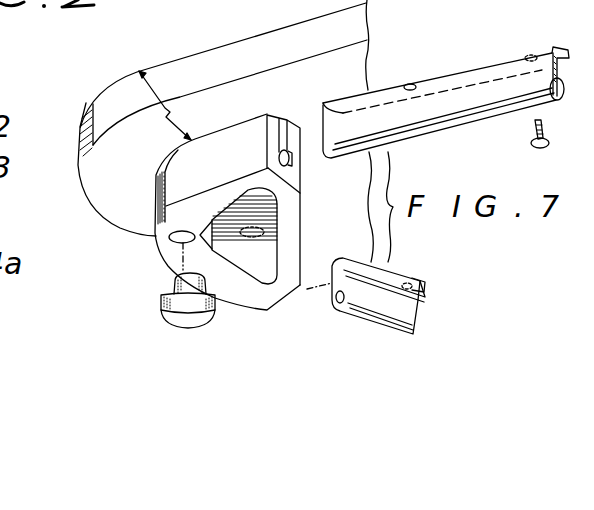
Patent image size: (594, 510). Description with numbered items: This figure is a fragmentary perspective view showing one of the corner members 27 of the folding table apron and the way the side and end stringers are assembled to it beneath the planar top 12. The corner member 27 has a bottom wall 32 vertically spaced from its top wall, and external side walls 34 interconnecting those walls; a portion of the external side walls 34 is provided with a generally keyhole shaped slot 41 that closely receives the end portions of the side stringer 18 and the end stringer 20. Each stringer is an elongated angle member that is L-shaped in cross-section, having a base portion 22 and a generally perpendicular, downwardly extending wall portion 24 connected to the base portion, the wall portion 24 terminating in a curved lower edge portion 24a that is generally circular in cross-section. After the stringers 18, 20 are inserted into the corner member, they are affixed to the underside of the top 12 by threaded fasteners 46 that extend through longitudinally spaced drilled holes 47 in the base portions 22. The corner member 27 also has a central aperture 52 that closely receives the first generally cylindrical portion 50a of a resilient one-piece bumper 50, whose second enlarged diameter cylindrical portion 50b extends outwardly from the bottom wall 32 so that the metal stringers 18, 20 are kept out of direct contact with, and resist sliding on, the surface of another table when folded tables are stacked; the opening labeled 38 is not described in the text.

The top 12 is at (200, 64).
The corner member 27 is at (154, 88).
The external side wall 34 is at (182, 156).
The window opening 38 is at (236, 213).
The bottom wall 32 is at (287, 237).
The keyhole shaped slot 41 is at (293, 157).
The central aperture 52 is at (169, 238).
The bumper member 50 is at (141, 292).
The first cylindrical portion 50a is at (166, 277).
The second enlarged diameter cylindrical portion 50b is at (156, 292).
The side stringer 18 is at (361, 92).
The wall portion 24 is at (420, 110).
The curved lower edge portion 24a is at (483, 113).
The drilled hole 47 is at (412, 83).
The base portion 22 is at (558, 48).
The threaded fastener 46 is at (543, 132).
The end stringer 20 is at (352, 318).